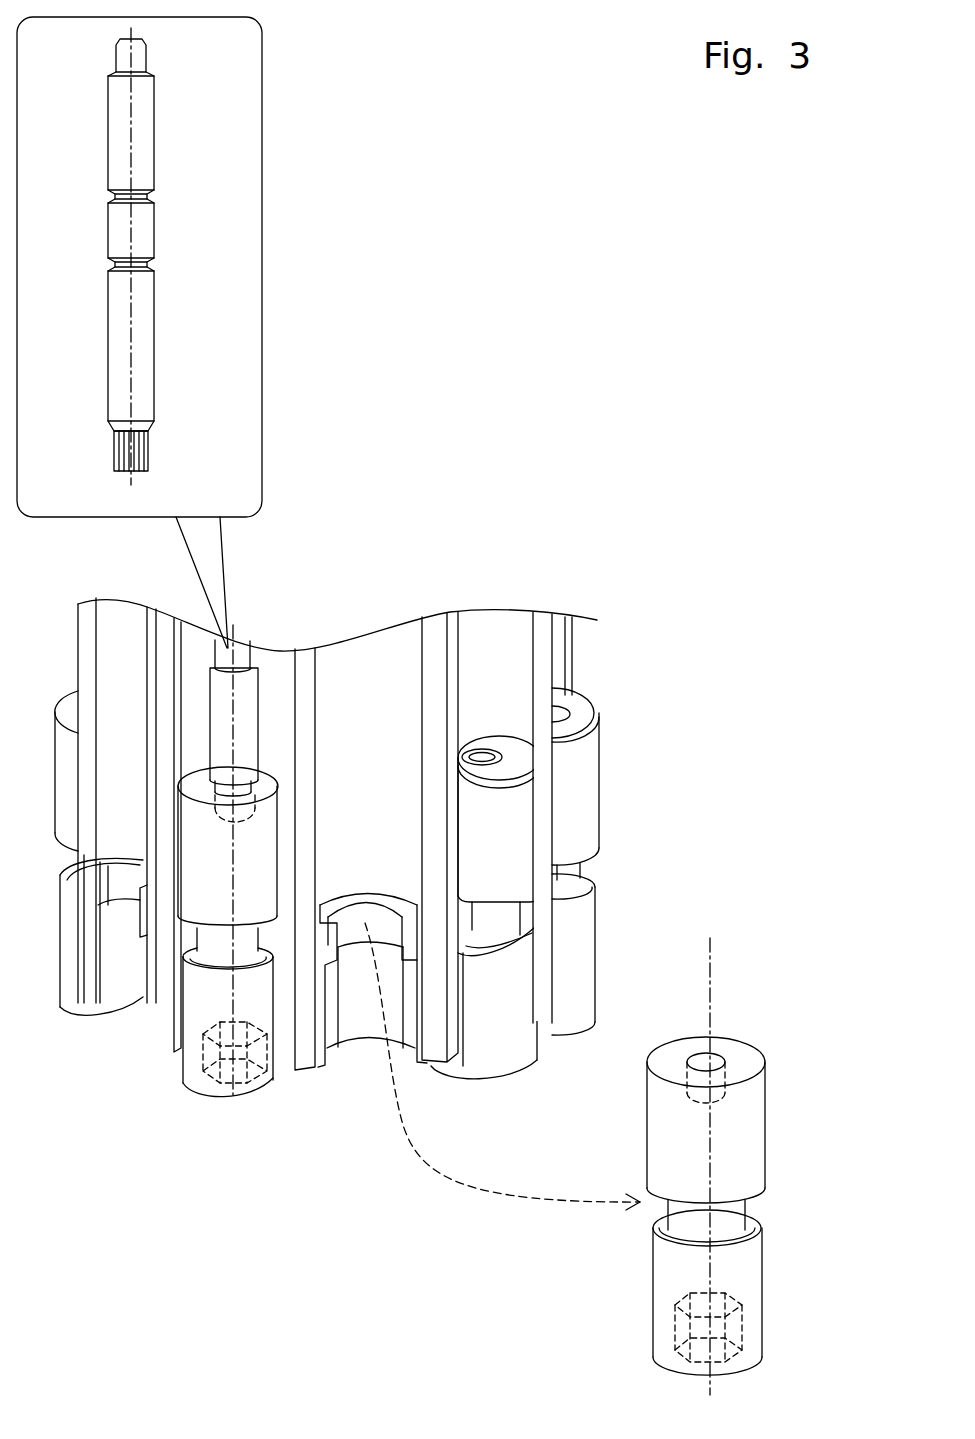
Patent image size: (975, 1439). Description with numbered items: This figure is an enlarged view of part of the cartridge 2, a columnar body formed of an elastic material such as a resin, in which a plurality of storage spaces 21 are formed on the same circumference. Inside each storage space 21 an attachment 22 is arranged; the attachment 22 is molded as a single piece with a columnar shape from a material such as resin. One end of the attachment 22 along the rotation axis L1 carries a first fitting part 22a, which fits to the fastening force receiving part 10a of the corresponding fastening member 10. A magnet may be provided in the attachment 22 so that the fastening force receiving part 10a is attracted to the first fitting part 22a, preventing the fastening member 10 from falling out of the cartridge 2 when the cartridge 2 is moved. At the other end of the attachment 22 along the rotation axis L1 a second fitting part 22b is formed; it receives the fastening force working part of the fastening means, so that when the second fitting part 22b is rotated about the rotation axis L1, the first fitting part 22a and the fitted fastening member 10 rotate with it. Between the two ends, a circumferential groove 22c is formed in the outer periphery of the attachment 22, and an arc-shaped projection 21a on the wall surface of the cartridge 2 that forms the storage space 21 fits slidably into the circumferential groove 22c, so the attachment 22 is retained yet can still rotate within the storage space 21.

The cartridge 2 is at (425, 711).
The fastening member 10 is at (248, 710).
The fastening force receiving part 10a is at (150, 452).
The storage space 21 is at (293, 898).
The arc-shaped projection 21a is at (267, 945).
The attachment 22 is at (425, 986).
The first fitting part 22a is at (257, 795).
The second fitting part 22b is at (233, 1097).
The circumferential groove 22c is at (230, 948).
The rotation axis L1 is at (471, 1010).